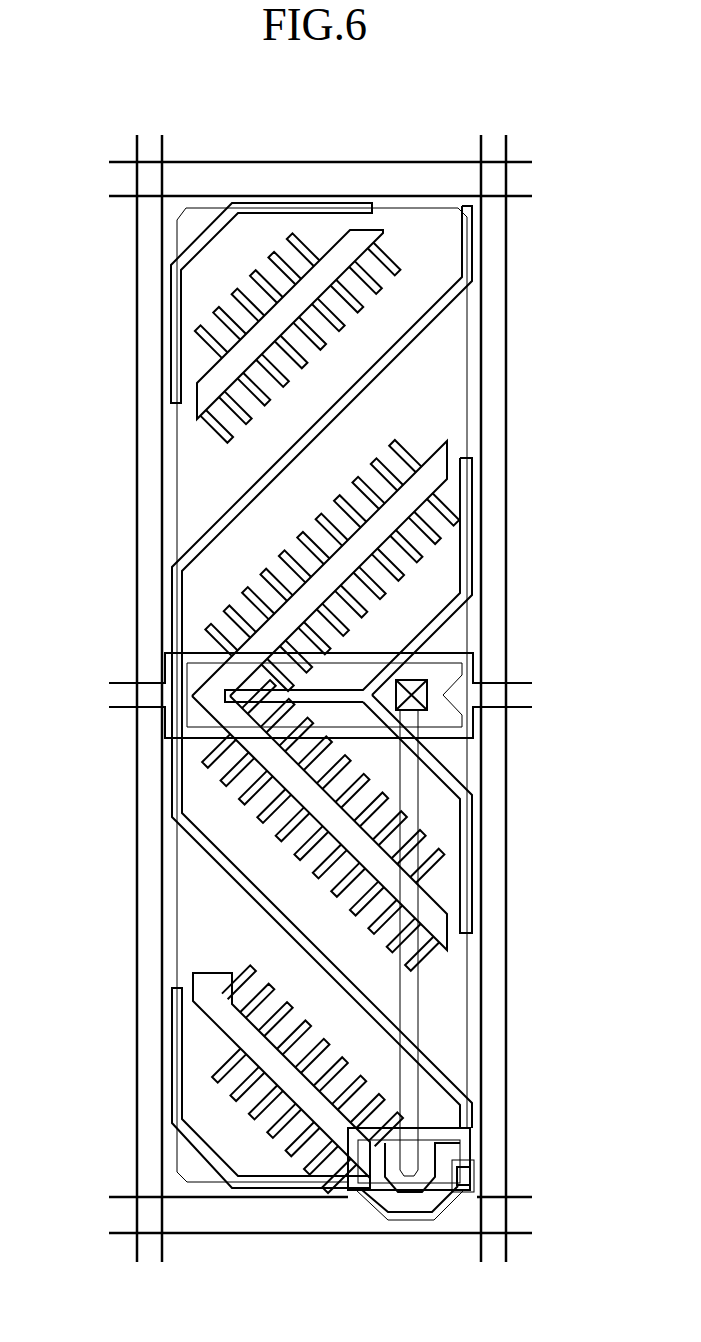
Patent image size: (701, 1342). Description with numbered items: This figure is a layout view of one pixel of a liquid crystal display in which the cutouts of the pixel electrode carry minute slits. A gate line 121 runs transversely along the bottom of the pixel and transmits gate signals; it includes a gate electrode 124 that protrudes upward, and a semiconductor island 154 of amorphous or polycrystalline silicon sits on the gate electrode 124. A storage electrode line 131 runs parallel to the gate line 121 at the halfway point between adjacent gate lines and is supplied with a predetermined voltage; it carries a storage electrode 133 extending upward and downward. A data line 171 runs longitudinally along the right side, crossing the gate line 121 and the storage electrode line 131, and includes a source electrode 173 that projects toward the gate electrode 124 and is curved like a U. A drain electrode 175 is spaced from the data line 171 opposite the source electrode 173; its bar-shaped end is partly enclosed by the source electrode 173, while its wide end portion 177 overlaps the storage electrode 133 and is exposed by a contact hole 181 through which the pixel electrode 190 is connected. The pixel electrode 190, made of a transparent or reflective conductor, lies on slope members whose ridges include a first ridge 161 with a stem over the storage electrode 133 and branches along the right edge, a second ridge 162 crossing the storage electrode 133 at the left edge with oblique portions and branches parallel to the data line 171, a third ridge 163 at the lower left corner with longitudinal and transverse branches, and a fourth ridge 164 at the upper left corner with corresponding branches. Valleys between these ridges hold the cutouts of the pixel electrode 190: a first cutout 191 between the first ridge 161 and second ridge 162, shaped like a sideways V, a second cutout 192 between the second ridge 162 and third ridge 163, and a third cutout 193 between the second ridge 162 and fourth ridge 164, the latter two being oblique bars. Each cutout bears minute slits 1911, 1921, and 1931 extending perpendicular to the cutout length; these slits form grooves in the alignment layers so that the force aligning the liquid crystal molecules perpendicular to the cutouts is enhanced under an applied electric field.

The gate line 121 is at (240, 1236).
The gate electrode 124 is at (350, 1180).
The storage electrode line 131 is at (520, 683).
The storage electrode 133 is at (443, 652).
The semiconductor island 154 is at (457, 1192).
The first ridge 161 is at (447, 768).
The second ridge 162 is at (218, 877).
The third ridge 163 is at (190, 1153).
The fourth ridge 164 is at (197, 237).
The data line 171 is at (508, 895).
The source electrode 173 is at (362, 1197).
The drain electrode 175 is at (425, 974).
The wide end portion 177 is at (382, 655).
The contact hole 181 is at (428, 708).
The pixel electrode 190 is at (177, 915).
The first cutout 191 is at (271, 825).
The minute slit 1911 is at (203, 755).
The second cutout 192 is at (229, 1079).
The minute slit 1921 is at (198, 1020).
The third cutout 193 is at (369, 320).
The minute slit 1931 is at (400, 255).